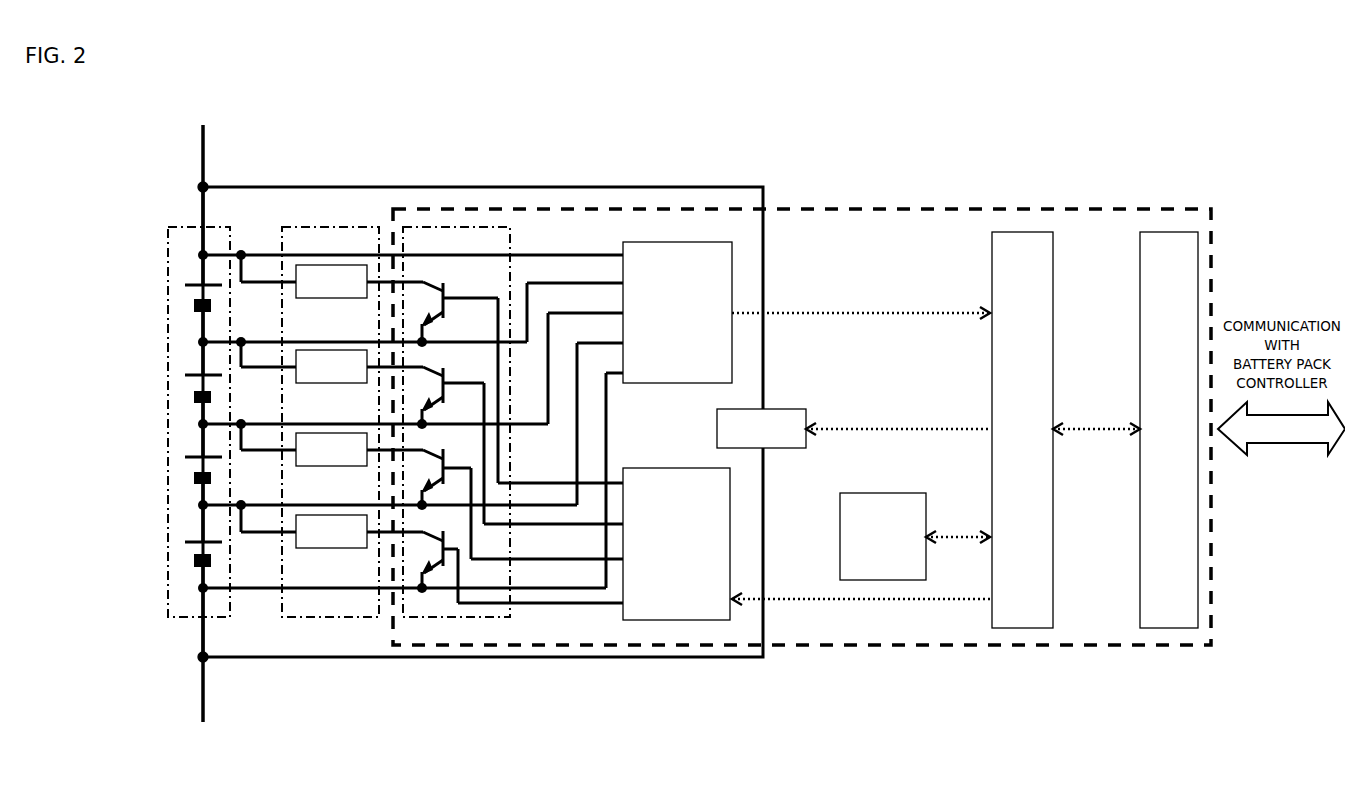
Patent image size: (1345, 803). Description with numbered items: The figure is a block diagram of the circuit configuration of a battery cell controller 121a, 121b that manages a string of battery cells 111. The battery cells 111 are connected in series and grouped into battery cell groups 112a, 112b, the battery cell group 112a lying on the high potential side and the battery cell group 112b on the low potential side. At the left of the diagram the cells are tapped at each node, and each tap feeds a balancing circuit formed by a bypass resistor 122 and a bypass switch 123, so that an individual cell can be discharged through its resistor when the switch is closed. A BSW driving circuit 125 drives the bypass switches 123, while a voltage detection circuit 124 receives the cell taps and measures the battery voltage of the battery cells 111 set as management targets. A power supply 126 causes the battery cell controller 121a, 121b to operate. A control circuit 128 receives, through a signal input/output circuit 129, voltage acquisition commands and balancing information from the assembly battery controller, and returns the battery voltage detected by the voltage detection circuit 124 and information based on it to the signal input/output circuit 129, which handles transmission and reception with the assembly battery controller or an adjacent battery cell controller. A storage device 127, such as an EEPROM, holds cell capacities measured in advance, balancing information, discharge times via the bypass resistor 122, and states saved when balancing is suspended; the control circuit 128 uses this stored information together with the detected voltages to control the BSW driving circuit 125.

The battery cells 111 is at (180, 547).
The battery cell group 112a is at (179, 377).
The battery cell group 112b is at (186, 227).
The battery cell controller 121a is at (873, 177).
The battery cell controller 121b is at (704, 407).
The bypass resistor 122 is at (335, 227).
The bypass switch 123 is at (455, 227).
The voltage detection circuit 124 is at (733, 280).
The BSW driving circuit 125 is at (655, 468).
The power supply 126 is at (784, 407).
The storage device 127 is at (878, 493).
The control circuit 128 is at (1026, 232).
The signal input/output circuit 129 is at (1166, 232).